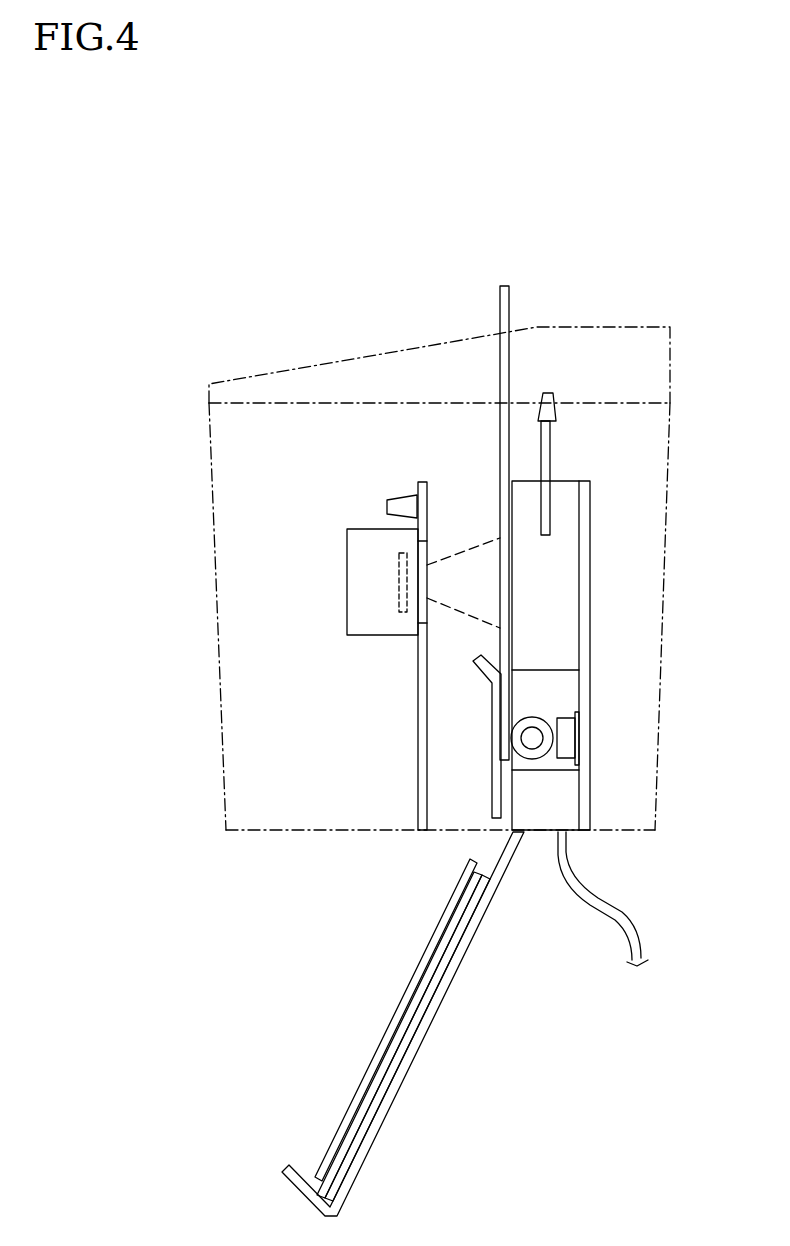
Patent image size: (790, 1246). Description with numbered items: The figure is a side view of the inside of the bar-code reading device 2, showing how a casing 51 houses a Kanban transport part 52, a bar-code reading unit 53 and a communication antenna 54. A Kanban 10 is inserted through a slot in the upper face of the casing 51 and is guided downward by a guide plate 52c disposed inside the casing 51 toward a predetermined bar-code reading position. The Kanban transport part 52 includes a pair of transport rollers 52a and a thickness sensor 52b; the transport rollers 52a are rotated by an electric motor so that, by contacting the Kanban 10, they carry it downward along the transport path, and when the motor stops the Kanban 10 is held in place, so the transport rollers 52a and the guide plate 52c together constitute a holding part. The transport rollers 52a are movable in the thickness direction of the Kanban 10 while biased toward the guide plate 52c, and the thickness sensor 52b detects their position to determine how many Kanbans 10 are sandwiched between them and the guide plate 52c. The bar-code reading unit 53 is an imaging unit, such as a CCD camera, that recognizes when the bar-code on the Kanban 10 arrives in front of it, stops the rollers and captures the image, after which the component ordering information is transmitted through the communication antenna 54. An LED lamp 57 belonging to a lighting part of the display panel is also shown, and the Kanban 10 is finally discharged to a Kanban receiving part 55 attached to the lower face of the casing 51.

The bar-code reading device 2 is at (213, 188).
The Kanban 10 is at (500, 306).
The casing 51 is at (601, 327).
The Kanban transport part 52 is at (543, 710).
The transport rollers 52a is at (519, 740).
The thickness sensor 52b is at (565, 738).
The guide plate 52c is at (492, 699).
The bar-code reading unit 53 is at (347, 578).
The communication antenna 54 is at (550, 452).
The Kanban receiving part 55 is at (411, 1090).
The LED lamp 57 is at (403, 503).